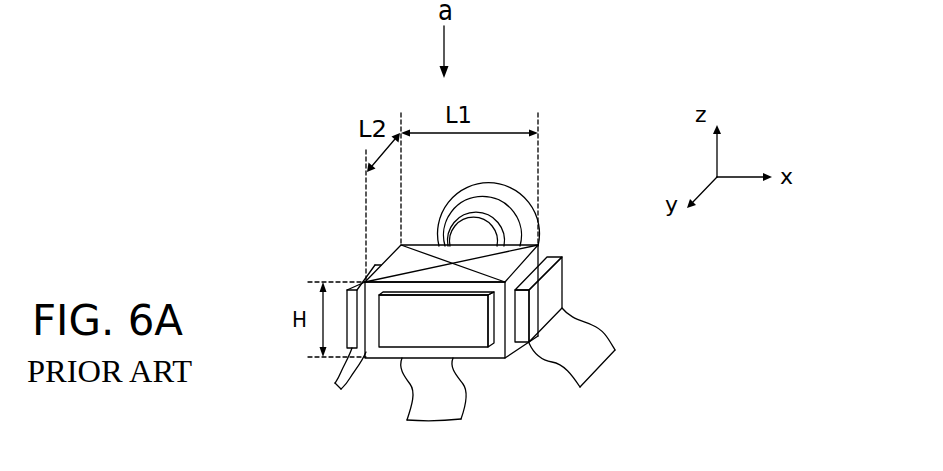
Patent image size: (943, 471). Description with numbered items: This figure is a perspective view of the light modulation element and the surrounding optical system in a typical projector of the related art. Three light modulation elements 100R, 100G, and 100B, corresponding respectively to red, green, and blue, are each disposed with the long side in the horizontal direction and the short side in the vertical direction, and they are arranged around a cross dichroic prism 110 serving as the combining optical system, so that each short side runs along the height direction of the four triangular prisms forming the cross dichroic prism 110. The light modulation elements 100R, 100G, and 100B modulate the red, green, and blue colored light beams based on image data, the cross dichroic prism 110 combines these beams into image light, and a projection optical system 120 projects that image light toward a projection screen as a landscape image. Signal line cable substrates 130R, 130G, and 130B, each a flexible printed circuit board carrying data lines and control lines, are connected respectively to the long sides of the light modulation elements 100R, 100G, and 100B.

The cross dichroic prism 110 is at (417, 246).
The projection optical system 120 is at (514, 188).
The light modulation element 100R is at (364, 281).
The light modulation element 100G is at (395, 342).
The light modulation element 100B is at (553, 293).
The signal line cable substrate 130R is at (343, 375).
The signal line cable substrate 130G is at (463, 417).
The signal line cable substrate 130B is at (597, 372).